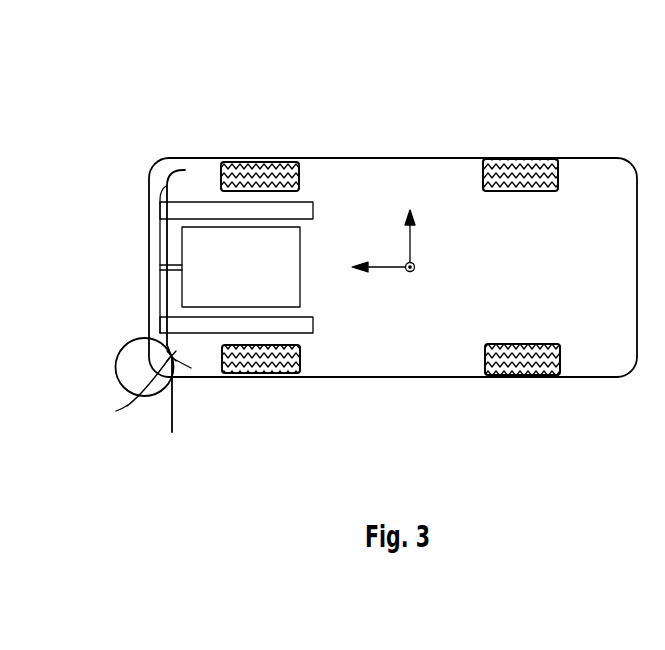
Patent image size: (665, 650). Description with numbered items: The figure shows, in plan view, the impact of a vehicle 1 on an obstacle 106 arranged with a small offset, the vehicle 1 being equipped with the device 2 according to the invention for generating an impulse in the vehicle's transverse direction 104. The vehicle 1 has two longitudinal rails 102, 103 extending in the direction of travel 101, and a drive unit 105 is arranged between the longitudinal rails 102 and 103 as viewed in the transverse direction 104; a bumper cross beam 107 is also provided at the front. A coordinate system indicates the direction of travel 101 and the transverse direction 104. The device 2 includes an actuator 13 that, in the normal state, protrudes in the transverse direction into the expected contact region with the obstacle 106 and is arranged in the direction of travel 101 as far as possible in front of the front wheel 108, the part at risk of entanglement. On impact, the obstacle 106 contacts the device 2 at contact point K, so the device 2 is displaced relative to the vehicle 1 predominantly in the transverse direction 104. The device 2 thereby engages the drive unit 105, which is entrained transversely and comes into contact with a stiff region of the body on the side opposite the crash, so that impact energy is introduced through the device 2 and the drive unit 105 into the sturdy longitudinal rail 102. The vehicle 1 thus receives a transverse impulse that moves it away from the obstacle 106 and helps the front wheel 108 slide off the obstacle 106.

The vehicle 1 is at (406, 158).
The device 2 is at (165, 247).
The actuator 13 is at (174, 362).
The direction of travel 101 is at (382, 268).
The longitudinal rail 102 is at (202, 207).
The longitudinal rail 103 is at (305, 328).
The vehicle's transverse direction 104 is at (412, 242).
The drive unit 105 is at (253, 276).
The obstacle 106 is at (130, 367).
The bumper cross beam 107 is at (158, 292).
The front wheel 108 is at (257, 162).